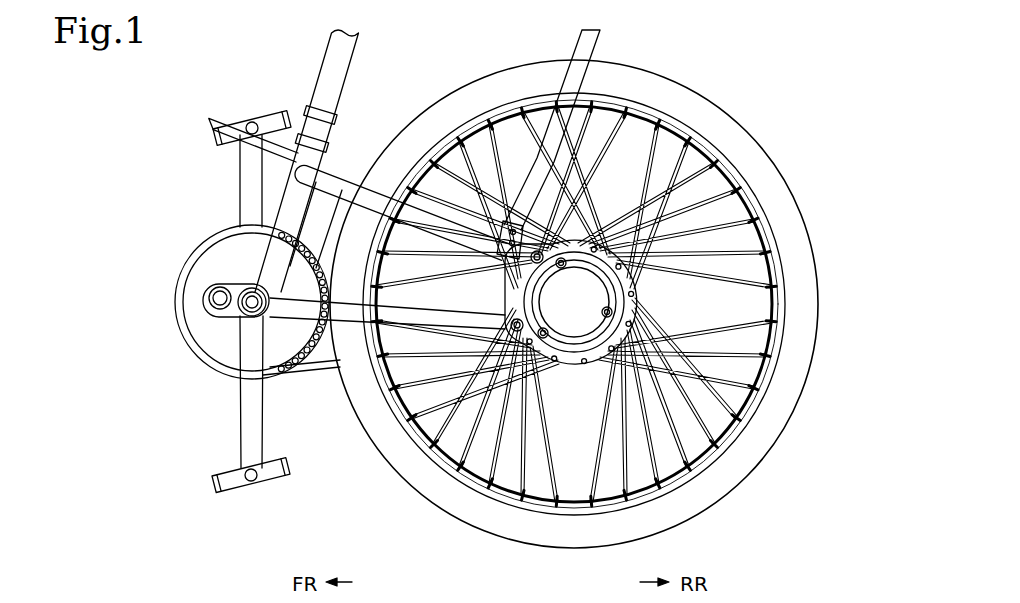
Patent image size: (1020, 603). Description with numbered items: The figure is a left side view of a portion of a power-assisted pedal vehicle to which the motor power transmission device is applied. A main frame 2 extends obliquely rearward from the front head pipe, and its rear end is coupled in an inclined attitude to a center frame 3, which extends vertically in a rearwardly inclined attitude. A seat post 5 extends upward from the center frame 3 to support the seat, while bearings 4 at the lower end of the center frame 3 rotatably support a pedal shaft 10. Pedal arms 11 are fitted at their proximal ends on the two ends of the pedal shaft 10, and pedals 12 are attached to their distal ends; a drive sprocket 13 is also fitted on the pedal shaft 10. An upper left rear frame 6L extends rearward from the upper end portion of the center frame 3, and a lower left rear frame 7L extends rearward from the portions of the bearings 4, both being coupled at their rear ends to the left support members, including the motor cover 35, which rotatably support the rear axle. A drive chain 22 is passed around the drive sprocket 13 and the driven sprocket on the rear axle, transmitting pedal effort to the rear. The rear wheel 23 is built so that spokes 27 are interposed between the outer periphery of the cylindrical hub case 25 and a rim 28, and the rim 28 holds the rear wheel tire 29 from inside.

The main frame 2 is at (222, 122).
The center frame 3 is at (283, 202).
The bearings 4 is at (262, 258).
The seat post 5 is at (362, 40).
The upper left rear frame 6L is at (392, 196).
The lower left rear frame 7L is at (401, 328).
The pedal shaft 10 is at (232, 312).
The pedal arms 11 is at (240, 150).
The pedals 12 is at (275, 113).
The drive sprocket 13 is at (302, 360).
The drive chain 22 is at (331, 374).
The rear wheel 23 is at (754, 107).
The hub case 25 is at (607, 262).
The spokes 27 is at (716, 386).
The rim 28 is at (753, 408).
The rear wheel tire 29 is at (755, 468).
The motor cover 35 is at (588, 288).